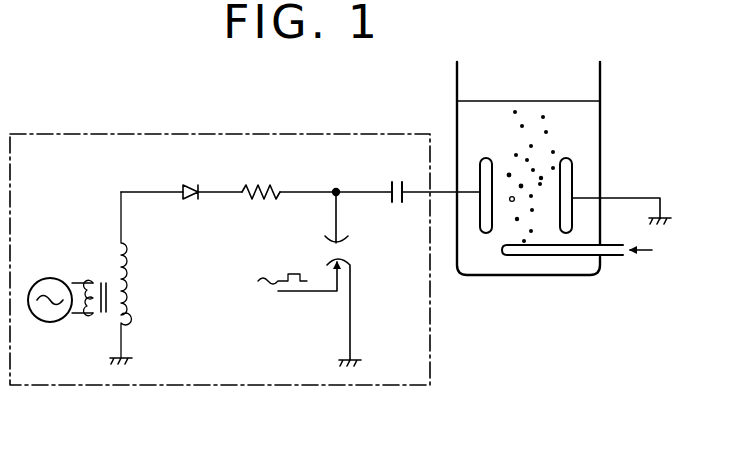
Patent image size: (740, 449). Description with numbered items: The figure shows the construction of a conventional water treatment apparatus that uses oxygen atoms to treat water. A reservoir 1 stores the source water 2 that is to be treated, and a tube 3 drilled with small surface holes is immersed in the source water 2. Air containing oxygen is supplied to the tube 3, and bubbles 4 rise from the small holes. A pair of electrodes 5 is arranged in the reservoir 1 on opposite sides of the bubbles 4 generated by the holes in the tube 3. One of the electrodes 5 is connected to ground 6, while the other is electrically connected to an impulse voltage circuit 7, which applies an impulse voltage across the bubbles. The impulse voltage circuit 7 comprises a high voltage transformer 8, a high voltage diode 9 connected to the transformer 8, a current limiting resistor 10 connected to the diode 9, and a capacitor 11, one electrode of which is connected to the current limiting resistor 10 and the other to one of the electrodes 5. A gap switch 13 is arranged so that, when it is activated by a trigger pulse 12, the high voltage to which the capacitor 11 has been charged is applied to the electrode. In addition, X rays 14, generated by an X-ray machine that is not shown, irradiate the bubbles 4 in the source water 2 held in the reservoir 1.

The reservoir 1 is at (600, 70).
The source water 2 is at (578, 133).
The tube 3 is at (543, 258).
The bubbles 4 is at (518, 157).
The pair of electrodes 5 is at (481, 158).
The ground 6 is at (663, 227).
The impulse voltage circuit 7 is at (103, 133).
The high voltage transformer 8 is at (95, 275).
The high voltage diode 9 is at (192, 178).
The current limiting resistor 10 is at (260, 180).
The capacitor 11 is at (396, 172).
The trigger pulse 12 is at (278, 287).
The gap switch 13 is at (350, 248).
The X rays 14 is at (533, 90).